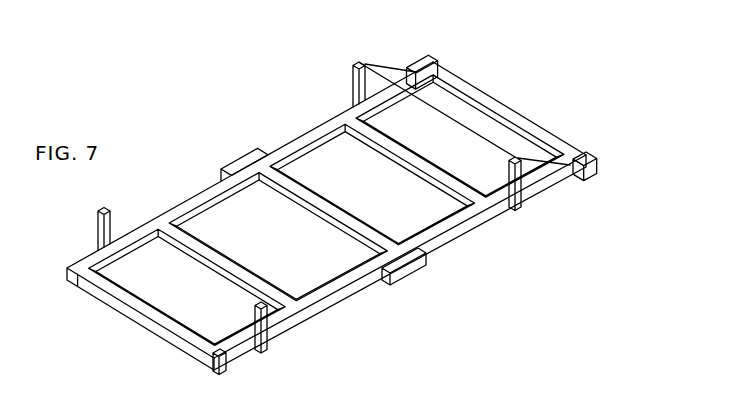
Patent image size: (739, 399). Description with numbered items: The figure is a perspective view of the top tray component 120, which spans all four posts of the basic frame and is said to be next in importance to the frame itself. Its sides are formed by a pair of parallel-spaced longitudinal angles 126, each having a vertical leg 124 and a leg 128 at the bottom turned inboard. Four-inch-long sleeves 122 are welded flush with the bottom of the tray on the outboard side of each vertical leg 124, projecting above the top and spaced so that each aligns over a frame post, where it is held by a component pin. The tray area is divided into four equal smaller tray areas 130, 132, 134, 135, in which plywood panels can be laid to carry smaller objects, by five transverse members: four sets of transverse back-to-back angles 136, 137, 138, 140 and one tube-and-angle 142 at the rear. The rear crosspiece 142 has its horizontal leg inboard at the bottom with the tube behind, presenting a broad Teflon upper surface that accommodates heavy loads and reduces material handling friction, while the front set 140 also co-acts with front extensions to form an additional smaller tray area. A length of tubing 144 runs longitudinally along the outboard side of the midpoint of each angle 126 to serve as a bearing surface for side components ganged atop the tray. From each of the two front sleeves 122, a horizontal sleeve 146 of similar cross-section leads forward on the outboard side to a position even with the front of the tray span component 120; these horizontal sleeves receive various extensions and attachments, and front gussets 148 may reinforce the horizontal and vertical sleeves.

The top tray component 120 is at (240, 108).
The sleeve 122 is at (100, 230).
The vertical leg 124 is at (183, 203).
The longitudinal angle 126 is at (213, 185).
The leg 128 is at (203, 213).
The tray area 130 is at (228, 330).
The tray area 132 is at (330, 276).
The tray area 134 is at (428, 232).
The tray area 135 is at (485, 212).
The transverse back-to-back angles 136 is at (213, 276).
The transverse back-to-back angles 137 is at (336, 246).
The transverse back-to-back angles 138 is at (399, 182).
The transverse back-to-back angles 140 is at (472, 132).
The tube-and-angle 142 is at (200, 365).
The length of tubing 144 is at (410, 275).
The horizontal sleeve 146 is at (545, 190).
The front gusset 148 is at (408, 40).